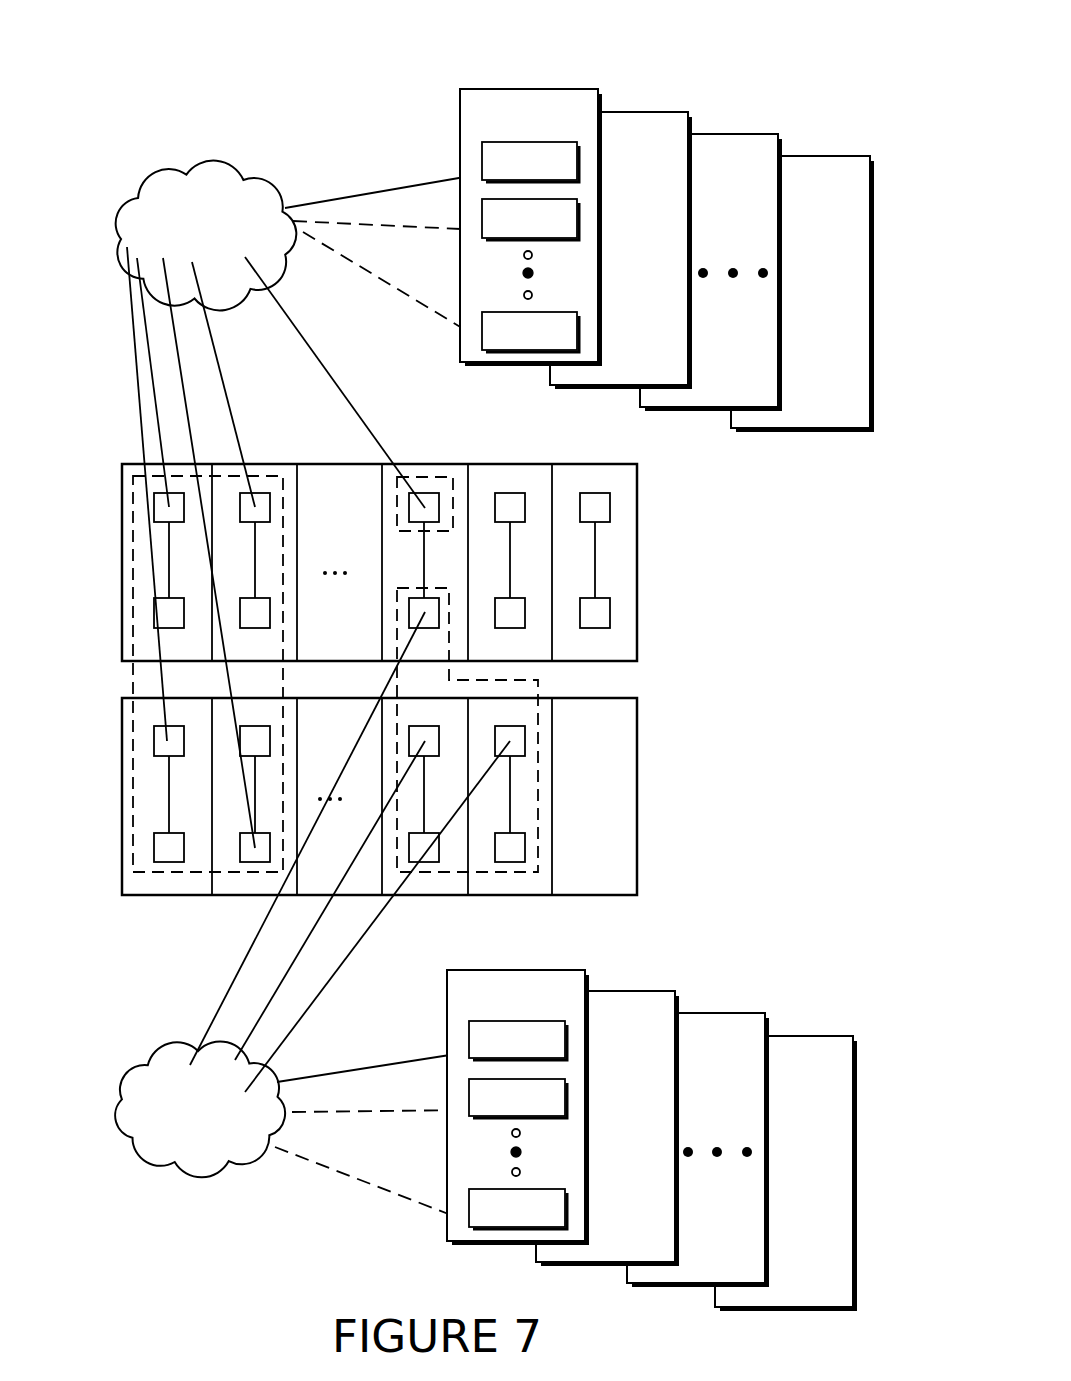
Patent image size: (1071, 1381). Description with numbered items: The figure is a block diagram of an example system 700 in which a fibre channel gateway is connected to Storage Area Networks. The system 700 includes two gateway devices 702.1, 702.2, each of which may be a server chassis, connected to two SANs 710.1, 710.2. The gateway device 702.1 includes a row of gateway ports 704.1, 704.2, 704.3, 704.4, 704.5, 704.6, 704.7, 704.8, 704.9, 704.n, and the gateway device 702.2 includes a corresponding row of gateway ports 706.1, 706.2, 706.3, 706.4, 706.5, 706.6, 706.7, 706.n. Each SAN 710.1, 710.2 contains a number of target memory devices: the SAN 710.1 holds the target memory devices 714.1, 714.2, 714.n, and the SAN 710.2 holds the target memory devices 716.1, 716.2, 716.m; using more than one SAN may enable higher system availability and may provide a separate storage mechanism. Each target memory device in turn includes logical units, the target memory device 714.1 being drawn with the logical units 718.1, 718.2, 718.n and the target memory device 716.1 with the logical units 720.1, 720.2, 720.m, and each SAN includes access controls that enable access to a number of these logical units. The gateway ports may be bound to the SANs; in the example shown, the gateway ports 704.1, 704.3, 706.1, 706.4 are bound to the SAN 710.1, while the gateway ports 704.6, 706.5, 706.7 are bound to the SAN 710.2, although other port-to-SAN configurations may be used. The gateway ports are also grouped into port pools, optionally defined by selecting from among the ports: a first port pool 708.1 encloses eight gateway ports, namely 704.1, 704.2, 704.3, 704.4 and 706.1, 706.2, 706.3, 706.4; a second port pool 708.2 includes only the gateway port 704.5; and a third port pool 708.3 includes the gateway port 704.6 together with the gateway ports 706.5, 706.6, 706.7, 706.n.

The system 700 is at (248, 84).
The gateway device 702.1 is at (121, 493).
The gateway device 702.2 is at (122, 877).
The gateway port 704.1 is at (168, 545).
The gateway port 704.2 is at (168, 595).
The gateway port 704.3 is at (250, 545).
The gateway port 704.4 is at (250, 595).
The gateway port 704.5 is at (418, 545).
The gateway port 704.6 is at (418, 595).
The gateway port 704.7 is at (508, 545).
The gateway port 704.8 is at (508, 595).
The gateway port 704.9 is at (592, 545).
The gateway port 704.n is at (592, 596).
The gateway port 706.1 is at (168, 779).
The gateway port 706.2 is at (168, 829).
The gateway port 706.3 is at (252, 779).
The gateway port 706.4 is at (252, 829).
The gateway port 706.5 is at (428, 779).
The gateway port 706.6 is at (428, 829).
The gateway port 706.7 is at (512, 779).
The gateway port 706.n is at (512, 828).
The first port pool 708.1 is at (132, 574).
The second port pool 708.2 is at (398, 512).
The third port pool 708.3 is at (400, 660).
The SAN 710.1 is at (122, 183).
The SAN 710.2 is at (172, 1177).
The target memory device 714.1 is at (547, 88).
The target memory device 714.2 is at (656, 112).
The target memory device 714.n is at (849, 156).
The target memory device 716.1 is at (565, 970).
The target memory device 716.2 is at (647, 991).
The target memory device 716.m is at (853, 1036).
The logical unit 718.1 is at (482, 150).
The logical unit 718.2 is at (491, 239).
The logical unit 718.n is at (567, 312).
The logical unit 720.1 is at (469, 1028).
The logical unit 720.2 is at (478, 1117).
The logical unit 720.m is at (555, 1189).